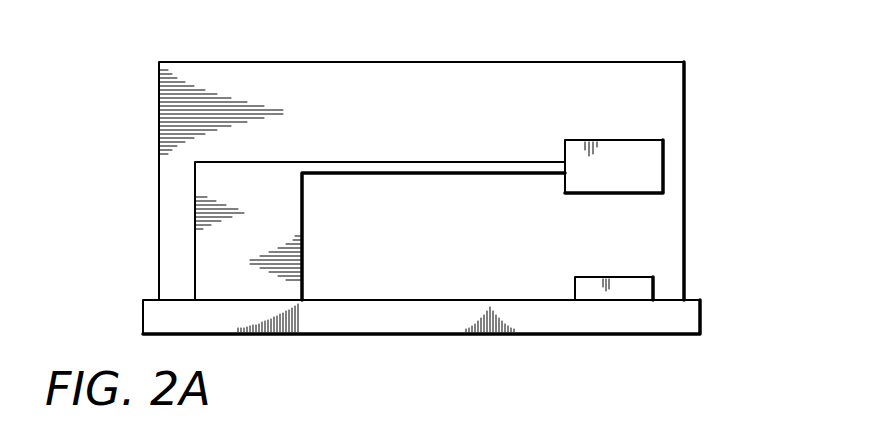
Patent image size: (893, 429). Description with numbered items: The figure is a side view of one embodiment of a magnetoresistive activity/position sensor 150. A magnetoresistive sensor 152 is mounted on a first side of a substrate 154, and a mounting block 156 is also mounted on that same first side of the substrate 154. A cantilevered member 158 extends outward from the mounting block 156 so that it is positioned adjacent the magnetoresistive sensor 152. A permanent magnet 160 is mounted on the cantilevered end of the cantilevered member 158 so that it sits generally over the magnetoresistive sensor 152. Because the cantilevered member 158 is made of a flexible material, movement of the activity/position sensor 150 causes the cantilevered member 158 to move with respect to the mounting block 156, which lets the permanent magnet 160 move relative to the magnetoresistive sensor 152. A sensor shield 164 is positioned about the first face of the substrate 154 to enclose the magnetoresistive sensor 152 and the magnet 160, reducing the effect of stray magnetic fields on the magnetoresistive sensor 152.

The magnetoresistive activity/position sensor 150 is at (245, 50).
The magnetoresistive sensor 152 is at (630, 285).
The substrate 154 is at (372, 320).
The mounting block 156 is at (215, 249).
The cantilevered member 158 is at (447, 160).
The permanent magnet 160 is at (614, 140).
The sensor shield 164 is at (685, 109).